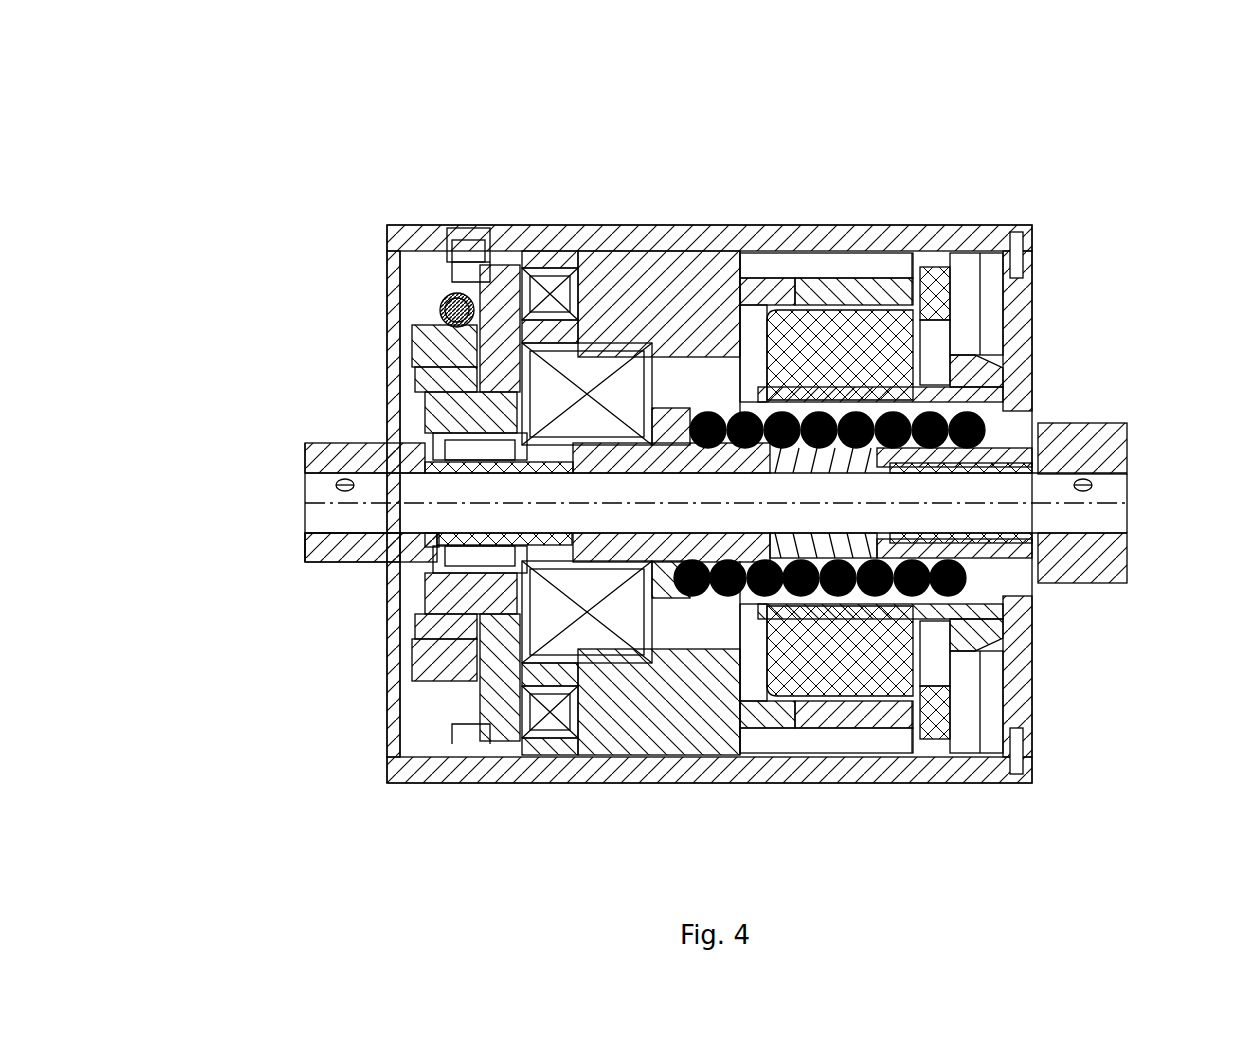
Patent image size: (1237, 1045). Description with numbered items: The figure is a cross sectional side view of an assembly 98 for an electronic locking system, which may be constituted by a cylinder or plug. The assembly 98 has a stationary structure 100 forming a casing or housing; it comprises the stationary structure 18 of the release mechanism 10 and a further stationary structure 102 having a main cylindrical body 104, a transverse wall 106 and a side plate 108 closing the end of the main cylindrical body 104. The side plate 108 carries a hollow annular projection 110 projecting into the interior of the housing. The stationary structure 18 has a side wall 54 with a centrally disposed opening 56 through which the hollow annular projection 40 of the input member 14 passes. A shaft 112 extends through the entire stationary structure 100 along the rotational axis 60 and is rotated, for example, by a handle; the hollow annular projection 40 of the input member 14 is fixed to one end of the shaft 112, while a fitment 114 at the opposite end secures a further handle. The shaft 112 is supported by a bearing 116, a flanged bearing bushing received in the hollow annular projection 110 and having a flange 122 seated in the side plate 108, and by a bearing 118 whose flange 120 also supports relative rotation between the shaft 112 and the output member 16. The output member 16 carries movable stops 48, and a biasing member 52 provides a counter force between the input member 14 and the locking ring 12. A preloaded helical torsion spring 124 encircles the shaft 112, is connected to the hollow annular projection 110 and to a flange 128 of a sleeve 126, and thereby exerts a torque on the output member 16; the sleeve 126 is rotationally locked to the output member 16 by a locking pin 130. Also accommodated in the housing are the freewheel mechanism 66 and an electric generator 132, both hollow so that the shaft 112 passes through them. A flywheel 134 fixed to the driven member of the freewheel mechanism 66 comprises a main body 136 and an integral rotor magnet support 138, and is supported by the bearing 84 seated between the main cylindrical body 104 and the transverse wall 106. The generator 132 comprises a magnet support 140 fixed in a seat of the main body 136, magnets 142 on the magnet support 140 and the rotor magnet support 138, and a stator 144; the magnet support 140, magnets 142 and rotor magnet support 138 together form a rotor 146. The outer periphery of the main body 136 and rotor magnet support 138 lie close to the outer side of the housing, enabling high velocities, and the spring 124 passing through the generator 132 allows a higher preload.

The release mechanism 10 is at (273, 319).
The locking ring 12 is at (430, 348).
The input member 14 is at (430, 380).
The output member 16 is at (450, 408).
The stationary structure 18 is at (420, 235).
The hollow annular projection 40 is at (712, 508).
The movable stops 48 is at (498, 415).
The biasing member 52 is at (440, 310).
The side wall 54 is at (392, 710).
The opening 56 is at (395, 567).
The rotational axis 60 is at (1115, 505).
The freewheel mechanism 66 is at (585, 390).
The bearing 84 is at (548, 290).
The assembly 98 is at (243, 183).
The stationary structure 100 is at (712, 516).
The further stationary structure 102 is at (705, 237).
The main cylindrical body 104 is at (658, 777).
The transverse wall 106 is at (500, 665).
The side plate 108 is at (1015, 337).
The hollow annular projection 110 is at (968, 552).
The shaft 112 is at (1110, 490).
The fitment 114 is at (1090, 565).
The bearing 116 is at (957, 538).
The bearing 118 is at (520, 540).
The flange 120 is at (435, 548).
The flange 122 is at (1022, 545).
The spring 124 is at (965, 432).
The sleeve 126 is at (705, 460).
The flange 128 is at (670, 430).
The locking pin 130 is at (458, 447).
The electric generator 132 is at (870, 216).
The flywheel 134 is at (750, 280).
The main body 136 is at (652, 310).
The rotor magnet support 138 is at (895, 265).
The magnet support 140 is at (773, 300).
The magnets 142 is at (850, 290).
The stator 144 is at (865, 355).
The rotor 146 is at (855, 138).